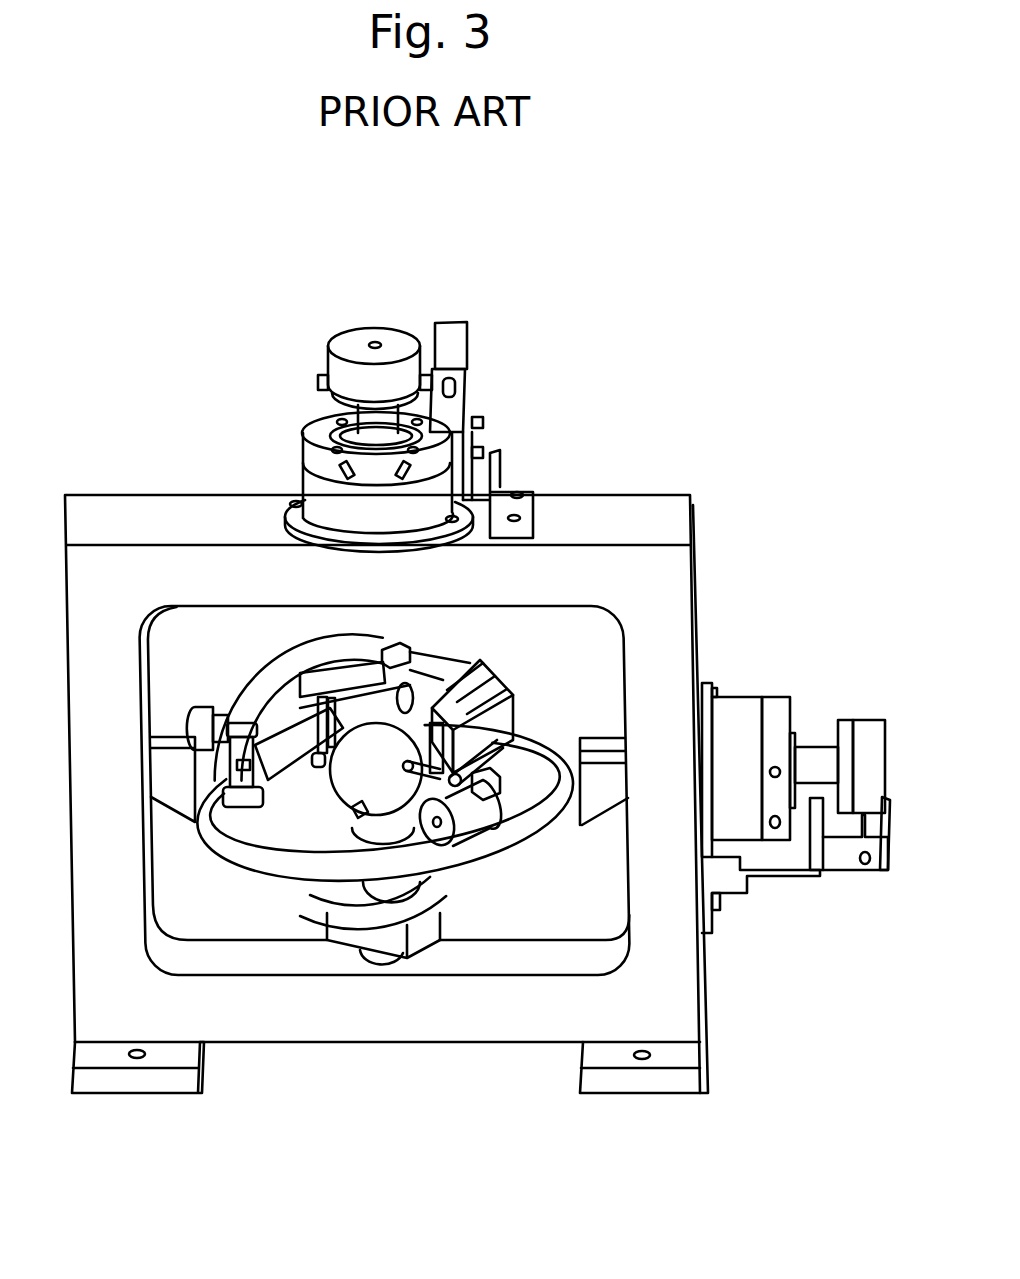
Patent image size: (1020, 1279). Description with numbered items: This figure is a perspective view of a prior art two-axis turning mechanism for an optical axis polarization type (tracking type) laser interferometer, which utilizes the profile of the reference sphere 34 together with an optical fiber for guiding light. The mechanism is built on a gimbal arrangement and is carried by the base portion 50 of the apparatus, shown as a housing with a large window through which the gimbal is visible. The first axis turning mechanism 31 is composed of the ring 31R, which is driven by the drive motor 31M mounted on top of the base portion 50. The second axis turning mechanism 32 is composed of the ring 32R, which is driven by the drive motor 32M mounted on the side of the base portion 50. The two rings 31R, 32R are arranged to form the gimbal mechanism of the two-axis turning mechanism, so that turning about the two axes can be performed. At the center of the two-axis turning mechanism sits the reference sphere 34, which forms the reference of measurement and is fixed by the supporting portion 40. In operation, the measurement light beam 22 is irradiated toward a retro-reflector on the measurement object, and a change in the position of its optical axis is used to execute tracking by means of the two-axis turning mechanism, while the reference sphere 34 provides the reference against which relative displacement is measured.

The measurement light beam 22 is at (500, 792).
The first axis turning mechanism 31 is at (124, 346).
The drive motor 31M is at (322, 490).
The ring of the first axis turning mechanism 31R is at (298, 648).
The second axis turning mechanism 32 is at (515, 1200).
The drive motor 32M is at (738, 724).
The ring of the second axis turning mechanism 32R is at (507, 857).
The reference sphere 34 is at (357, 783).
The supporting portion 40 is at (390, 805).
The base portion 50 is at (658, 997).